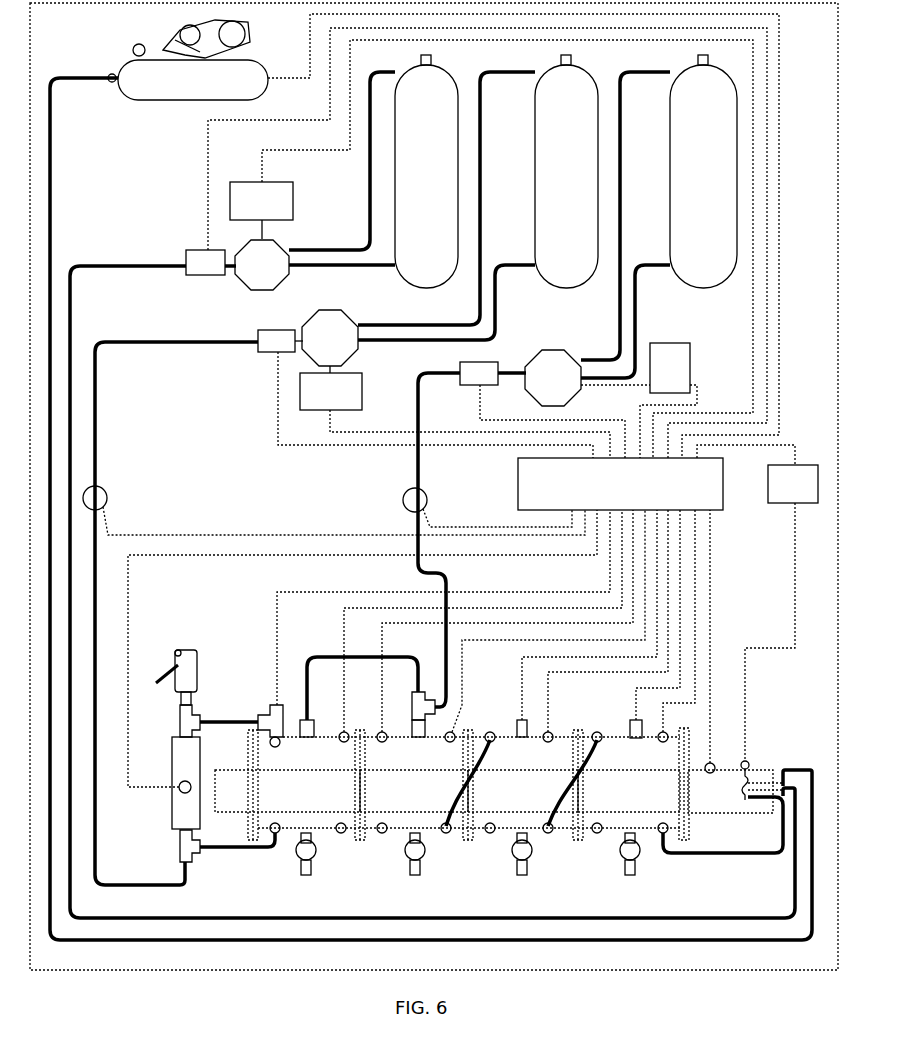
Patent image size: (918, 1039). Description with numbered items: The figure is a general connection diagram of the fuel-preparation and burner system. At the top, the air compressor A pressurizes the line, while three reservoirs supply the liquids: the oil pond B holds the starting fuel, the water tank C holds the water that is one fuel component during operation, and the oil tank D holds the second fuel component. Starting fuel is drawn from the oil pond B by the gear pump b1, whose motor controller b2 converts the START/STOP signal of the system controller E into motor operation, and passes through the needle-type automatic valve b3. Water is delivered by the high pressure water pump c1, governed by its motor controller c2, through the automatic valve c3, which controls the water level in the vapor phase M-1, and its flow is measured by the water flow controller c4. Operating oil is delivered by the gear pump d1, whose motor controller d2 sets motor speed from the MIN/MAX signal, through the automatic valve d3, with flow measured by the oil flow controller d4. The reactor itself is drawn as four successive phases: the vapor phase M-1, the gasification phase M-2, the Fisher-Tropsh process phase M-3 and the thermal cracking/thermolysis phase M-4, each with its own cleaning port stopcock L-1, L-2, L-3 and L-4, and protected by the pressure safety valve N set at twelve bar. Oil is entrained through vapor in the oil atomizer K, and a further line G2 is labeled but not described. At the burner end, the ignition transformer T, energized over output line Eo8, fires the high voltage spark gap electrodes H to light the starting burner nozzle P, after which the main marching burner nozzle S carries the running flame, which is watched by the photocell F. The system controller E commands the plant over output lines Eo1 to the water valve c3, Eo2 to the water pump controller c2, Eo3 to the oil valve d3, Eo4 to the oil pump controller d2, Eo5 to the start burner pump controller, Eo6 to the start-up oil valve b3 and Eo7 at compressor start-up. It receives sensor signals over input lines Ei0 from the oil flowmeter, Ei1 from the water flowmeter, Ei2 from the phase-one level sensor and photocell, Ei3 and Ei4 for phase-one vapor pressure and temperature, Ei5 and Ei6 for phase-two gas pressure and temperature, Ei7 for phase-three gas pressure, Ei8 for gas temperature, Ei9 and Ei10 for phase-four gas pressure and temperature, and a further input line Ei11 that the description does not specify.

The air compressor A is at (188, 60).
The oil pond B is at (426, 171).
The water tank C is at (566, 171).
The oil tank D is at (703, 171).
The system controller E is at (620, 484).
The ignition transformer T is at (793, 484).
The starting burner nozzle P is at (432, 509).
The gear pump for starting fuel b1 is at (310, 181).
The motor controller b2 is at (261, 201).
The automatic valve b3 is at (205, 262).
The high pressure water pump c1 is at (415, 222).
The motor controller c2 is at (331, 391).
The automatic valve c3 is at (276, 341).
The water flow controller c4 is at (105, 490).
The gear pump for driving/operation fuel d1 is at (584, 239).
The motor controller d2 is at (670, 368).
The automatic valve d3 is at (479, 373).
The oil flow controller d4 is at (401, 494).
The gas line G2 is at (453, 540).
The oil atomizer K is at (370, 697).
The pressure safety valve N is at (215, 742).
The photocell F is at (730, 791).
The high voltage spark gap electrodes H is at (753, 760).
The main marching burner nozzle S is at (723, 818).
The vapor phase M-1 is at (287, 785).
The gasification phase M-2 is at (411, 785).
The Fisher-Tropsh process phase M-3 is at (520, 785).
The thermal cracking/thermolysis phase M-4 is at (631, 784).
The phase 1 cleaning port stopcock/valve L-1 is at (299, 867).
The phase 2 cleaning port stopcock/valve L-2 is at (408, 867).
The phase 3 cleaning port stopcock/valve L-3 is at (515, 867).
The phase 4 cleaning port stopcock/valve L-4 is at (623, 867).
The output line to automatic water valve Eo1 is at (419, 405).
The output line to water pump controller Eo2 is at (453, 434).
The output line to automatic oil valve Eo3 is at (537, 421).
The output line to oil pump controller Eo4 is at (677, 413).
The output line to start burner pump controller Eo5 is at (486, 249).
The output line to automatic oil control valve for start-up Eo6 is at (474, 243).
The output line at compressor start-up Eo7 is at (523, 236).
The output line to ignition transformer Eo8 is at (759, 603).
The input line to oil flow controller Ei0 is at (497, 515).
The input line to water flow controller Ei1 is at (344, 521).
The input line at liquid level MAX / photocell Ei2 is at (349, 648).
The input line to manometer Ei3 is at (428, 623).
The input line to thermometer Ei4 is at (474, 635).
The input line to manometer Ei5 is at (502, 635).
The input line to thermometer Ei6 is at (537, 635).
The input line to manometer Ei7 is at (575, 623).
The input line to thermometer Ei8 is at (597, 635).
The input line to manometer Ei9 is at (644, 624).
The input line to thermometer Ei10 is at (669, 635).
The controller input 11 Ei11 is at (721, 641).